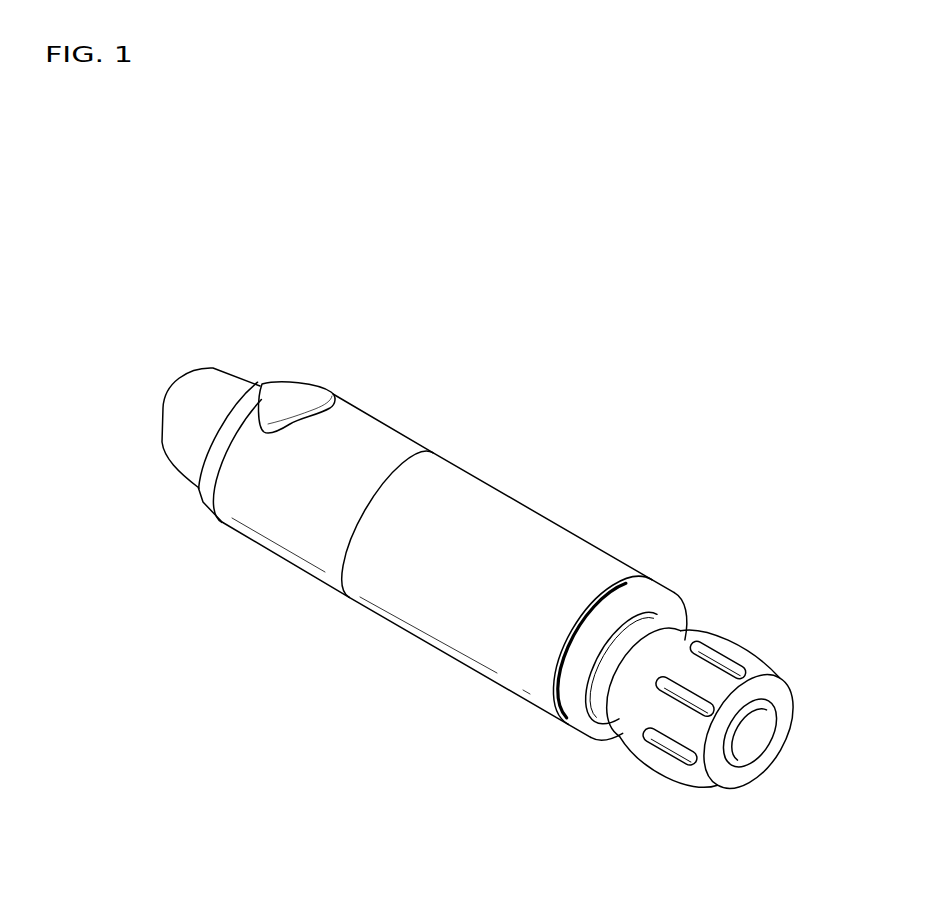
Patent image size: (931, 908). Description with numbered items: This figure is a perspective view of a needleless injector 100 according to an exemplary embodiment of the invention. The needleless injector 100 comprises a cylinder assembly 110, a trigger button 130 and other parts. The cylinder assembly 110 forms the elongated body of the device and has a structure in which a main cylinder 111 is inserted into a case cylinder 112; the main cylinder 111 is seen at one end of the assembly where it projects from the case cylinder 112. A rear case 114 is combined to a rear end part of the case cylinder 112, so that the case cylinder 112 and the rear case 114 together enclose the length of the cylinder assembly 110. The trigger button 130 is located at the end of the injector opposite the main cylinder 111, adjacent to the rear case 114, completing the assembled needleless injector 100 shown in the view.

The needleless injector 100 is at (247, 147).
The cylinder assembly 110 is at (520, 497).
The main cylinder 111 is at (712, 624).
The case cylinder 112 is at (597, 544).
The rear case 114 is at (376, 421).
The trigger button 130 is at (177, 390).